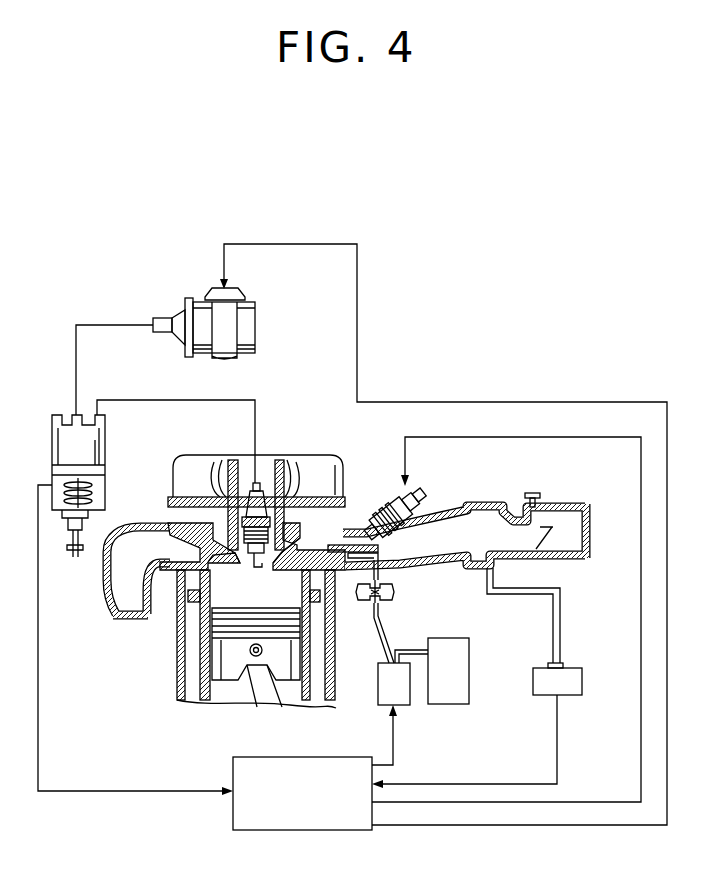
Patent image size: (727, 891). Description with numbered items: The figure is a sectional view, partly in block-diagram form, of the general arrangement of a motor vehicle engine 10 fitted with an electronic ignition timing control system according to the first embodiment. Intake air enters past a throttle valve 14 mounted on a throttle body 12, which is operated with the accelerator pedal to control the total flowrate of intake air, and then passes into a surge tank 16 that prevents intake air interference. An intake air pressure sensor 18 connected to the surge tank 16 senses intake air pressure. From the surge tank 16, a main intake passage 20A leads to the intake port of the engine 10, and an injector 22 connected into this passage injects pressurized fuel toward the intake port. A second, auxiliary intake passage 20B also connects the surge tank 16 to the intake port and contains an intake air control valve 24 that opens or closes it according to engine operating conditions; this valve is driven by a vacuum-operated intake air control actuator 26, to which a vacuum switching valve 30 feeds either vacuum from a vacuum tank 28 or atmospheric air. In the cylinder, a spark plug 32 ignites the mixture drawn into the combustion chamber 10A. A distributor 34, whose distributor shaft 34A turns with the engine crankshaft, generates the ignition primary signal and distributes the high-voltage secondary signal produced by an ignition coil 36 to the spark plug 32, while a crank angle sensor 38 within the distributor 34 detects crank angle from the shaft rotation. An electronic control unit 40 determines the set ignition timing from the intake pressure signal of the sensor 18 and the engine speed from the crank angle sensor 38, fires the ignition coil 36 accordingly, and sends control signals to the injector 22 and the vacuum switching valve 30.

The engine 10 is at (166, 681).
The combustion chamber 10A is at (268, 598).
The throttle body 12 is at (557, 500).
The throttle valve 14 is at (545, 553).
The surge tank 16 is at (481, 506).
The intake air pressure sensor 18 is at (573, 683).
The main intake passage 20A is at (383, 540).
The auxiliary intake passage 20B is at (320, 550).
The injector 22 is at (392, 507).
The intake air control valve 24 is at (345, 533).
The intake air control actuator 26 is at (395, 600).
The vacuum tank 28 is at (456, 683).
The vacuum switching valve 30 is at (378, 685).
The spark plug 32 is at (259, 480).
The distributor 34 is at (104, 447).
The distributor shaft 34A is at (68, 543).
The ignition coil 36 is at (247, 325).
The crank angle sensor 38 is at (52, 482).
The electronic control unit 40 is at (297, 765).